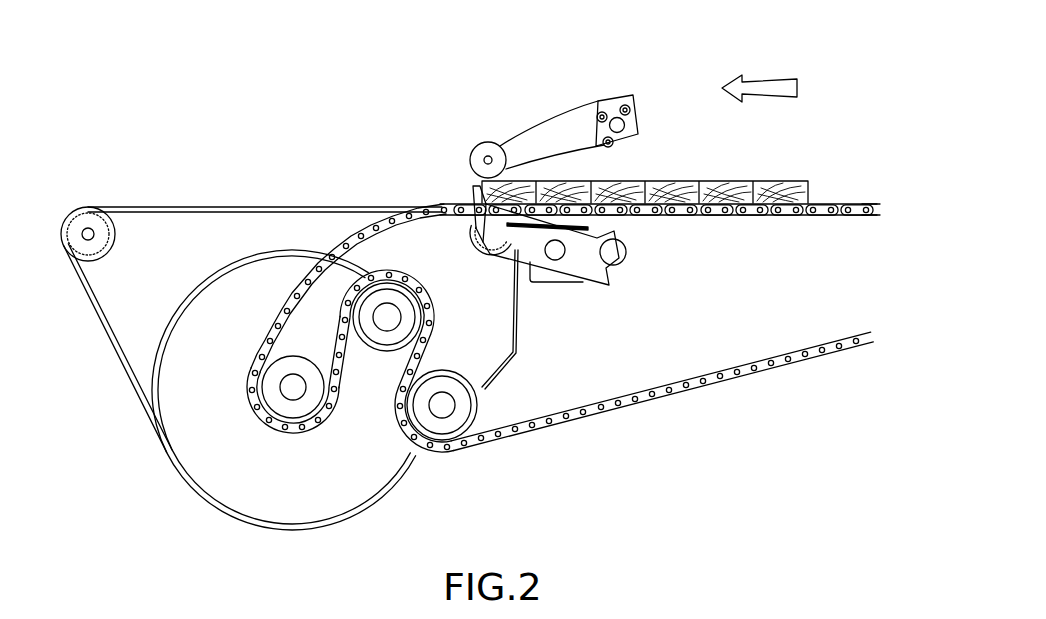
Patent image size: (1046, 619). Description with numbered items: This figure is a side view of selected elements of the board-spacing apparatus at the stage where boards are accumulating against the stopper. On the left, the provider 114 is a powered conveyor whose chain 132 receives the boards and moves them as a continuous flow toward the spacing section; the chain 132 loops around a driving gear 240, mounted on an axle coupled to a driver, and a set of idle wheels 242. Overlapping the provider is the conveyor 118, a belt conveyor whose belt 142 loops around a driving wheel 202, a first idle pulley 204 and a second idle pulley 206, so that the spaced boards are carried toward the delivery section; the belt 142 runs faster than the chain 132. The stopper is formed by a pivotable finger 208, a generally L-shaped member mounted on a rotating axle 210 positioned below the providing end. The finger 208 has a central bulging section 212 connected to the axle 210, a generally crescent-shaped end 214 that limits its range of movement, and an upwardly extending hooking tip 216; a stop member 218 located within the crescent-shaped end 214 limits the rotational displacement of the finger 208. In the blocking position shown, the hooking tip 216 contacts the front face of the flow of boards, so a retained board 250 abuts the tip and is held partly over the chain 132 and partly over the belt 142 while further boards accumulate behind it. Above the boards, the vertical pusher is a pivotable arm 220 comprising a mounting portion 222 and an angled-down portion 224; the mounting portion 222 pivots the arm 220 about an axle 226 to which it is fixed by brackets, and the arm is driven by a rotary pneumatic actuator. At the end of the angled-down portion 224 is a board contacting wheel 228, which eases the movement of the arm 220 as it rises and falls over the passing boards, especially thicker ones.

The provider 114 is at (786, 222).
The conveyor 118 is at (253, 282).
The chain 132 is at (835, 217).
The belt 142 is at (200, 207).
The driving wheel 202 is at (192, 428).
The first idle pulley 204 is at (492, 251).
The second idle pulley 206 is at (95, 212).
The pivotable finger 208 is at (568, 244).
The axle 210 is at (556, 262).
The central bulging section 212 is at (556, 238).
The crescent-shaped end 214 is at (588, 265).
The hooking tip 216 is at (473, 200).
The stop member 218 is at (626, 254).
The pivotable arm 220 is at (585, 95).
The mounting portion 222 is at (672, 101).
The angled-down portion 224 is at (510, 142).
The axle 226 is at (622, 125).
The board contacting wheel 228 is at (480, 148).
The driving gear 240 is at (273, 407).
The idle wheels 242 is at (375, 336).
The retained board 250 is at (522, 232).